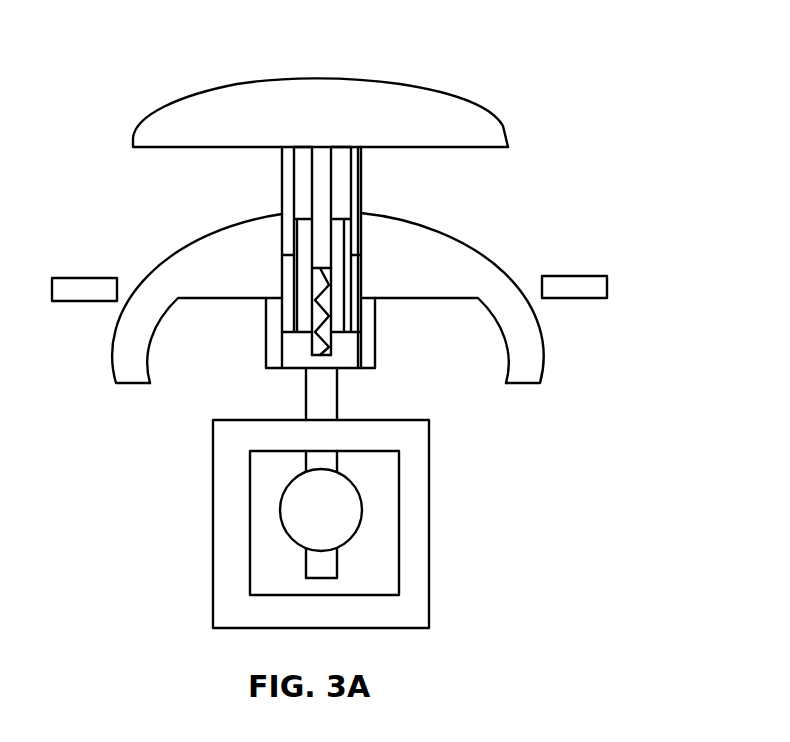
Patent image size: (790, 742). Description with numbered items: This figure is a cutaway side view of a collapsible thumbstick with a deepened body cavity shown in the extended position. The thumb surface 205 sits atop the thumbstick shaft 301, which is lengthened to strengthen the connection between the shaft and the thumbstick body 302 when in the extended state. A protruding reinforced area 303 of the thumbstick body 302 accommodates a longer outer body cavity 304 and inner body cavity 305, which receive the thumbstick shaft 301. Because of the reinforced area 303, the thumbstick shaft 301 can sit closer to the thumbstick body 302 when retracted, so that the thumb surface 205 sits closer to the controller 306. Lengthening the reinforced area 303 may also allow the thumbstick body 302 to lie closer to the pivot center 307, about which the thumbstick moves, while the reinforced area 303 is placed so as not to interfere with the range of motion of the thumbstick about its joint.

The thumb surface 205 is at (468, 113).
The thumbstick shaft 301 is at (362, 158).
The thumbstick body 302 is at (542, 357).
The reinforced area 303 is at (375, 358).
The outer body cavity 304 is at (361, 253).
The inner body cavity 305 is at (312, 205).
The controller 306 is at (607, 287).
The pivot center 307 is at (363, 519).